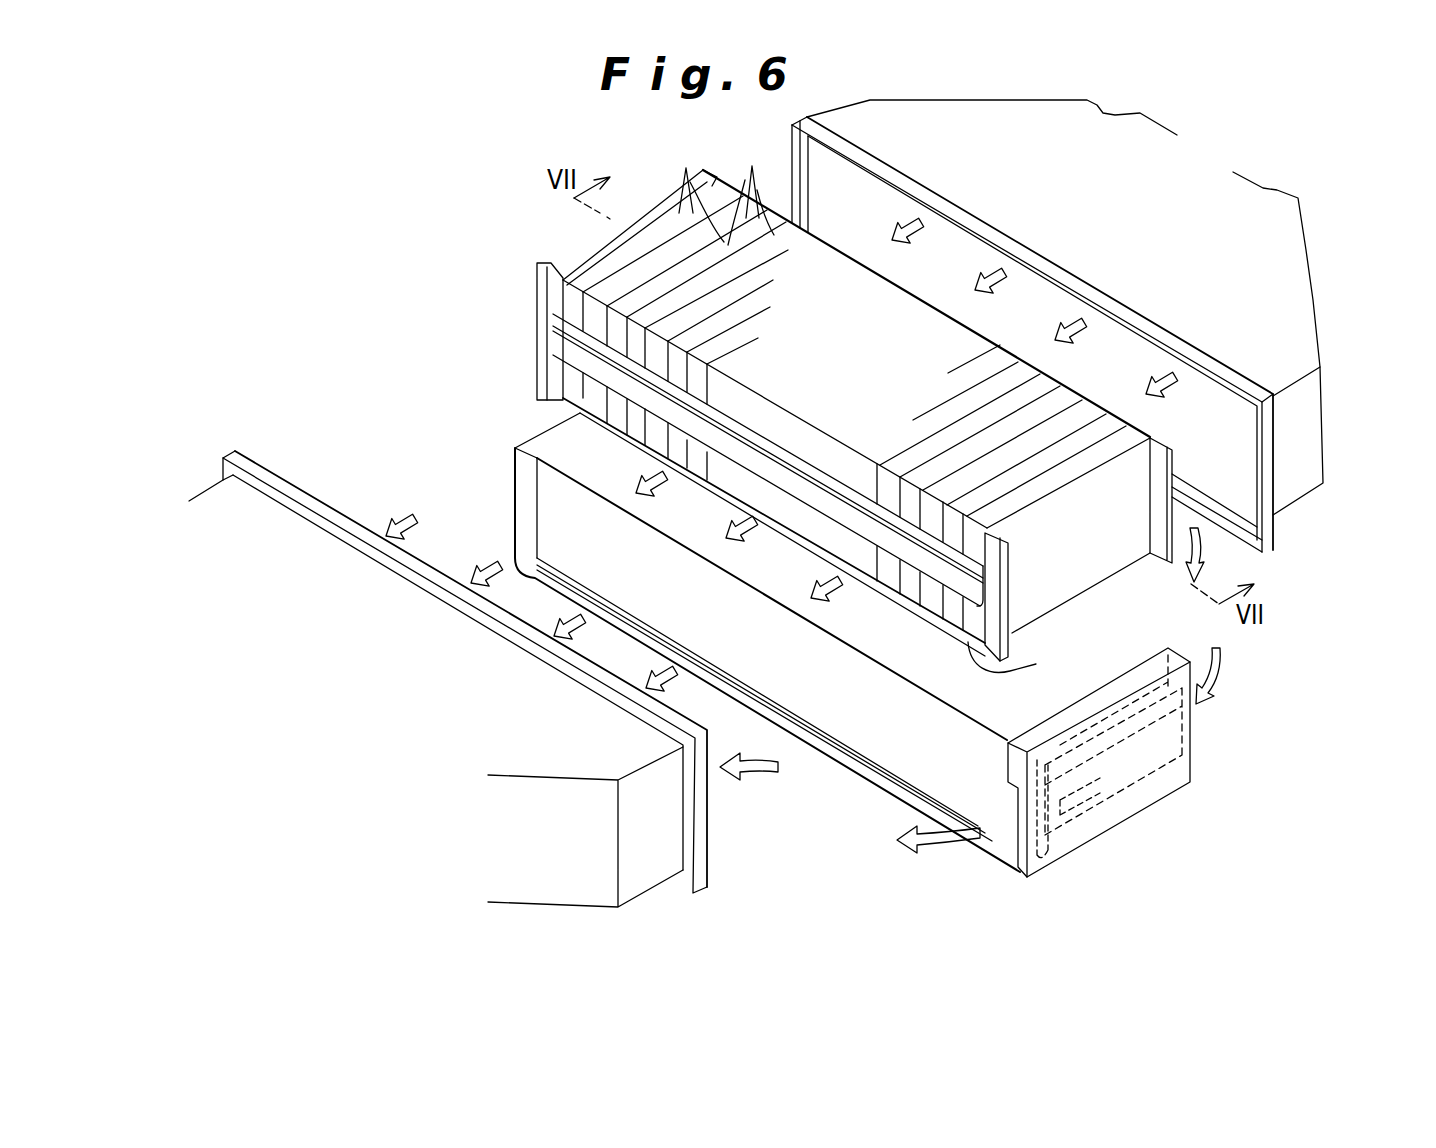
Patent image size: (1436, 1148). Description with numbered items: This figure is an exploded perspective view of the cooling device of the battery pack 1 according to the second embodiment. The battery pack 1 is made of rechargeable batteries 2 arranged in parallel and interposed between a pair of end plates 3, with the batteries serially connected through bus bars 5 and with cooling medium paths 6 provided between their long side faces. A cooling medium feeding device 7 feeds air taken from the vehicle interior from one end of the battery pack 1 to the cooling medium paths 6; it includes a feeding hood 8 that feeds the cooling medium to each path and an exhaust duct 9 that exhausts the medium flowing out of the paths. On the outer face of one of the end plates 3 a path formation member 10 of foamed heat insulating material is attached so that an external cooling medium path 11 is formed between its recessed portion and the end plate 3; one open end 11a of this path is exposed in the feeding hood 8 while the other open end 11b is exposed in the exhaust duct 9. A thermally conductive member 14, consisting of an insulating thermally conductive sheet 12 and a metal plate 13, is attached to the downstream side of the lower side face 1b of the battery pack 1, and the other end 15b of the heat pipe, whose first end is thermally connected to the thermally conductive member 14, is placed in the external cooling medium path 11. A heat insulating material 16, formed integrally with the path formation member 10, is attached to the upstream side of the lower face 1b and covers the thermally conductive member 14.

The battery pack 1 is at (644, 216).
The side face 1b is at (1028, 672).
The rechargeable batteries 2 is at (700, 172).
The end plates 3 is at (582, 258).
The bus bars 5 is at (563, 347).
The cooling medium paths 6 is at (756, 168).
The cooling medium feeding device 7 is at (1333, 450).
The feeding hood 8 is at (1290, 495).
The exhaust duct 9 is at (274, 500).
The path formation member 10 is at (1116, 782).
The external cooling medium path 11 is at (1173, 782).
The open end 11a is at (1193, 727).
The other open end 11b is at (1005, 820).
The insulating thermally conductive sheet 12 is at (867, 737).
The metal plate 13 is at (870, 772).
The thermally conductive member 14 is at (764, 729).
The other end of heat pipe 15b is at (1077, 827).
The heat insulating material 16 is at (734, 656).